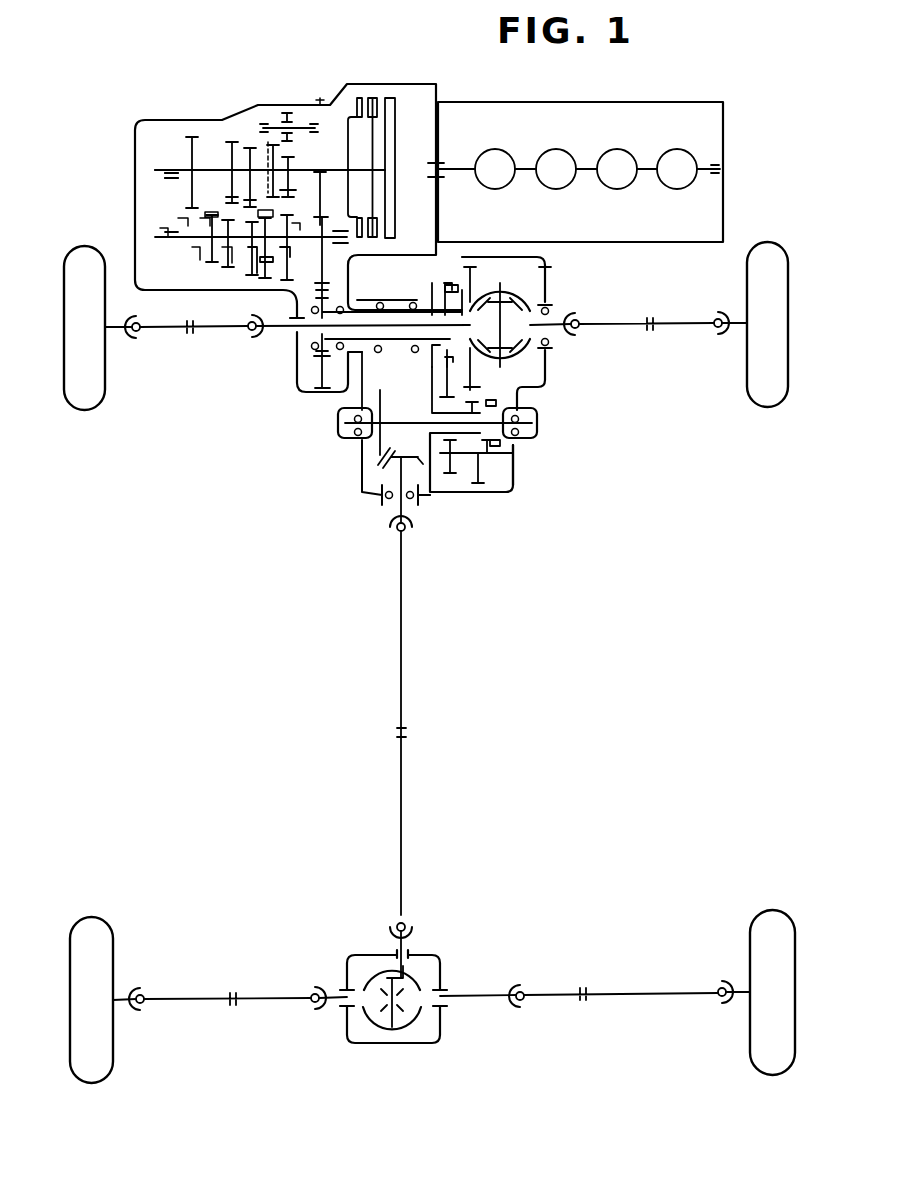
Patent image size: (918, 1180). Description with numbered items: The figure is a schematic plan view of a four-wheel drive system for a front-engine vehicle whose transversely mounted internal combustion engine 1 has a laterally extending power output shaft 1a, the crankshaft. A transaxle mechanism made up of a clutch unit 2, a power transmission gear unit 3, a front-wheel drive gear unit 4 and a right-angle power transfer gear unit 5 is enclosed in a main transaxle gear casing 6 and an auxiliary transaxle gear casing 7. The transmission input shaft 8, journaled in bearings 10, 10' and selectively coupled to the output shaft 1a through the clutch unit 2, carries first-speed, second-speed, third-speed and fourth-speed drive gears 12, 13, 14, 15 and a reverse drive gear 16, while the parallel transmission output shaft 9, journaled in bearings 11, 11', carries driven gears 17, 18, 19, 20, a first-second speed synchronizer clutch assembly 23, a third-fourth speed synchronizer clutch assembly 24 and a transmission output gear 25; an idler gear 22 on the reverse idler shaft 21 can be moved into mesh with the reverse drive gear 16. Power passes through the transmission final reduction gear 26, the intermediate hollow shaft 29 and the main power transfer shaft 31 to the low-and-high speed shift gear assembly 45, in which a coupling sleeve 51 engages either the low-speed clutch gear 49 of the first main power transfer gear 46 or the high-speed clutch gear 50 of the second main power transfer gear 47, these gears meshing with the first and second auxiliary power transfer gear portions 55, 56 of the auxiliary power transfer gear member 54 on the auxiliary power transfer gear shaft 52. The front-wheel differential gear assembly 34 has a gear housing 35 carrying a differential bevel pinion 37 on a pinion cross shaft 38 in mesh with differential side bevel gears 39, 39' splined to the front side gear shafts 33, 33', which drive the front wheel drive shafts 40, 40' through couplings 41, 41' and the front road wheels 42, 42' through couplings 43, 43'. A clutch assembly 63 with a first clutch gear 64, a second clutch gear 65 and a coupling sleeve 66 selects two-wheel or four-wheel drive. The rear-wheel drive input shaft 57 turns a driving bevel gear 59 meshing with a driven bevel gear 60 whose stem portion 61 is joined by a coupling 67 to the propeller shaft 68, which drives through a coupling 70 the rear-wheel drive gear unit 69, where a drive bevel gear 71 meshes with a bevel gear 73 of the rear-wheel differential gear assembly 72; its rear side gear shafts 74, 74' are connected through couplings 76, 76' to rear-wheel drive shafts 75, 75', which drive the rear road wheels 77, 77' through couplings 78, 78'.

The internal combustion engine 1 is at (581, 102).
The power output shaft 1a is at (455, 163).
The clutch unit 2 is at (407, 112).
The power transmission gear unit 3 is at (132, 134).
The front-wheel drive gear unit 4 is at (552, 352).
The right-angle power transfer gear unit 5 is at (370, 454).
The main transaxle gear casing 6 is at (133, 176).
The auxiliary transaxle gear casing 7 is at (500, 507).
The transmission input shaft 8 is at (192, 176).
The transmission output shaft 9 is at (180, 230).
The bearing 10 is at (270, 156).
The bearing 10' is at (162, 158).
The bearing 11 is at (256, 223).
The bearing 11' is at (157, 250).
The first-speed forward drive gear 12 is at (290, 192).
The second-speed forward drive gear 13 is at (265, 155).
The third-speed forward drive gear 14 is at (230, 160).
The fourth-speed forward drive gear 15 is at (187, 145).
The reverse drive gear 16 is at (270, 150).
The first-speed driven gear 17 is at (292, 216).
The second-speed driven gear 18 is at (250, 270).
The third-speed driven gear 19 is at (218, 275).
The fourth-speed driven gear 20 is at (196, 262).
The reverse idler shaft 21 is at (290, 123).
The idler gear 22 is at (283, 115).
The first-second speed synchronizer clutch assembly 23 is at (268, 262).
The third-fourth speed synchronizer clutch assembly 24 is at (218, 262).
The transmission output gear 25 is at (282, 253).
The transmission final reduction gear 26 is at (300, 380).
The intermediate hollow shaft 29 is at (362, 306).
The main power transfer shaft 31 is at (394, 311).
The front side gear shaft 33 is at (320, 325).
The front side gear shaft 33' is at (568, 349).
The front-wheel differential gear assembly 34 is at (520, 278).
The gear housing 35 is at (520, 292).
The differential bevel pinion 37 is at (498, 290).
The pinion cross shaft 38 is at (525, 392).
The differential side bevel gear 39 is at (483, 282).
The differential side bevel gear 39' is at (561, 291).
The front wheel drive shaft 40 is at (194, 341).
The front wheel drive shaft 40' is at (646, 315).
The constant-velocity or universal coupling 41 is at (357, 341).
The constant-velocity or universal coupling 41' is at (574, 319).
The front road wheel 42 is at (102, 336).
The front road wheel 42' is at (750, 324).
The constant-velocity or universal coupling 43 is at (130, 343).
The constant-velocity or universal coupling 43' is at (723, 341).
The low-and-high speed shift gear assembly 45 is at (437, 275).
The first main power transfer gear 46 is at (430, 362).
The second main power transfer gear 47 is at (472, 380).
The low-speed clutch gear 49 is at (430, 280).
The high-speed clutch gear 50 is at (433, 400).
The coupling sleeve 51 is at (462, 373).
The auxiliary power transfer gear shaft 52 is at (540, 425).
The auxiliary power transfer gear member 54 is at (452, 462).
The first auxiliary power transfer gear portion 55 is at (425, 496).
The second auxiliary power transfer gear portion 56 is at (478, 470).
The rear-wheel drive input shaft 57 is at (388, 440).
The driving bevel gear 59 is at (385, 405).
The driven bevel gear 60 is at (362, 480).
The stem portion 61 is at (398, 502).
The clutch assembly 63 is at (520, 470).
The first clutch gear 64 is at (492, 448).
The second clutch gear 65 is at (505, 445).
The coupling sleeve 66 is at (512, 452).
The constant-velocity or universal coupling 67 is at (409, 532).
The propeller shaft 68 is at (405, 695).
The rear-wheel drive gear unit 69 is at (345, 964).
The constant-velocity or universal coupling 70 is at (412, 924).
The drive bevel gear 71 is at (415, 968).
The rear-wheel differential gear assembly 72 is at (362, 1022).
The bevel gear 73 is at (394, 1012).
The rear side gear shaft 74 is at (332, 1018).
The rear side gear shaft 74' is at (478, 1018).
The rear-wheel drive shaft 75 is at (227, 1016).
The rear-wheel drive shaft 75' is at (621, 1013).
The constant-velocity or universal coupling 76 is at (299, 990).
The constant-velocity or universal coupling 76' is at (505, 982).
The rear road wheel 77 is at (113, 1000).
The rear road wheel 77' is at (748, 992).
The constant-velocity or universal coupling 78 is at (144, 985).
The constant-velocity or universal coupling 78' is at (728, 1011).